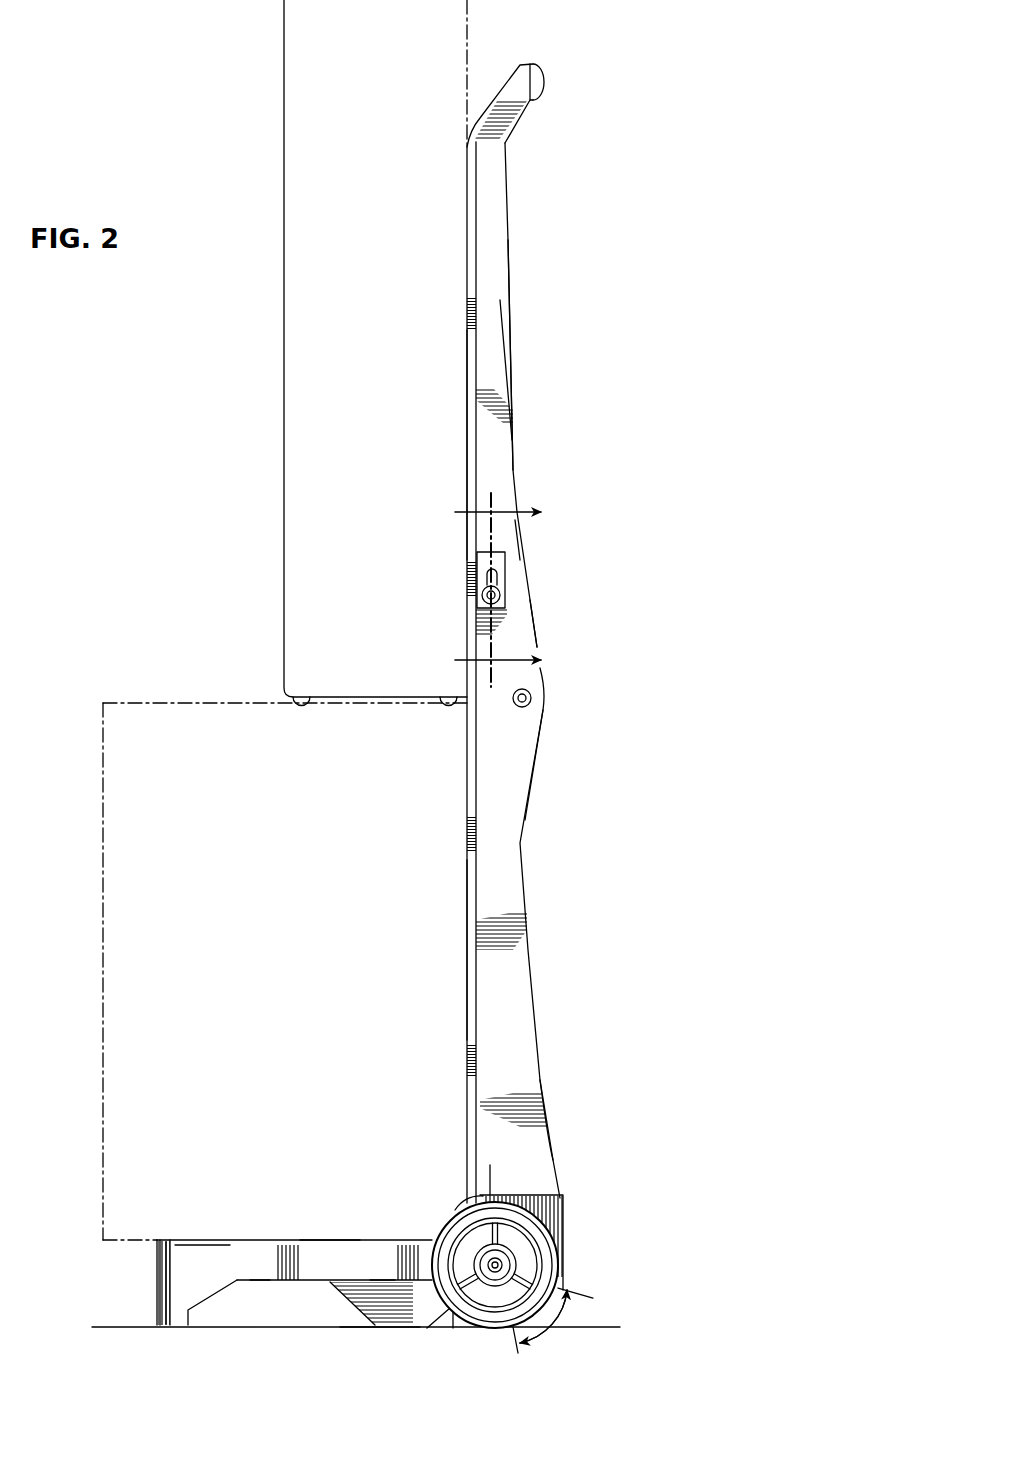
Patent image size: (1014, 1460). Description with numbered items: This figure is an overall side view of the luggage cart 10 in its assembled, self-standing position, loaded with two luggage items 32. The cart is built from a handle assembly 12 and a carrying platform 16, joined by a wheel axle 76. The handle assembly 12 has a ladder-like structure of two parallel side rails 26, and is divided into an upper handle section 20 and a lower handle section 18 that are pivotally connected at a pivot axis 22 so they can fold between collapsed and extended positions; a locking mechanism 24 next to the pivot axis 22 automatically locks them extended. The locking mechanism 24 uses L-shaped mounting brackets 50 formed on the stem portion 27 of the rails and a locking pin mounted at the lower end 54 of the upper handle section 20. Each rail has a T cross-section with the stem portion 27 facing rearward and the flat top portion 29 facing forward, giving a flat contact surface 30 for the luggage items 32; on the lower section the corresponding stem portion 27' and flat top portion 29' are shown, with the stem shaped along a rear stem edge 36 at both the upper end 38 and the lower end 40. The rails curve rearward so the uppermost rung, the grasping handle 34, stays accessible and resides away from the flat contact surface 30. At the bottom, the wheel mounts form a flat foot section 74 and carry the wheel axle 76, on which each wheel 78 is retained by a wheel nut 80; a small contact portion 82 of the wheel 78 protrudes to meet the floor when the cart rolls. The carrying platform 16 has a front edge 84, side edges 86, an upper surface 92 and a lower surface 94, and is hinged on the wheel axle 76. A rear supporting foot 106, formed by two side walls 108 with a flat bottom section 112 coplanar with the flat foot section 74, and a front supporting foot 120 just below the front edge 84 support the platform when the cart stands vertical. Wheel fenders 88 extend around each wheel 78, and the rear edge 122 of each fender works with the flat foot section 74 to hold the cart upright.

The luggage cart 10 is at (385, 679).
The handle assembly 12 is at (545, 703).
The carrying platform 16 is at (235, 1238).
The lower handle section 18 is at (523, 1002).
The upper handle section 20 is at (515, 620).
The pivot axis 22 is at (519, 438).
The locking mechanism 24 is at (502, 583).
The side rails 26 is at (523, 1082).
The stem portion 27 is at (541, 370).
The stem portion of lower handle section side rails 27' is at (541, 926).
The flat top portion 29 is at (431, 445).
The flat top portion of lower handle section side rails 29' is at (429, 950).
The flat contact surface 30 is at (468, 377).
The luggage items 32 is at (293, 590).
The grasping handle 34 is at (537, 77).
The rear stem edge 36 is at (535, 630).
The upper end of lower handle section 38 is at (522, 768).
The lower end of lower handle section 40 is at (537, 1132).
The L-shaped mounting brackets 50 is at (483, 560).
The lower end of upper handle section 54 is at (515, 538).
The flat foot section 74 is at (467, 1328).
The wheel axle 76 is at (510, 1270).
The wheel 78 is at (490, 1195).
The wheel nut 80 is at (505, 1263).
The contact portion 82 is at (563, 1315).
The front edge 84 is at (157, 1275).
The side edges 86 is at (205, 1262).
The wheel fenders 88 is at (460, 1210).
The upper surface 92 is at (327, 1240).
The lower surface 94 is at (247, 1282).
The rear supporting foot 106 is at (358, 1292).
The side walls 108 is at (380, 1297).
The flat bottom section 112 is at (400, 1328).
The front supporting foot 120 is at (167, 1312).
The rear edge of wheel fender 122 is at (563, 1197).